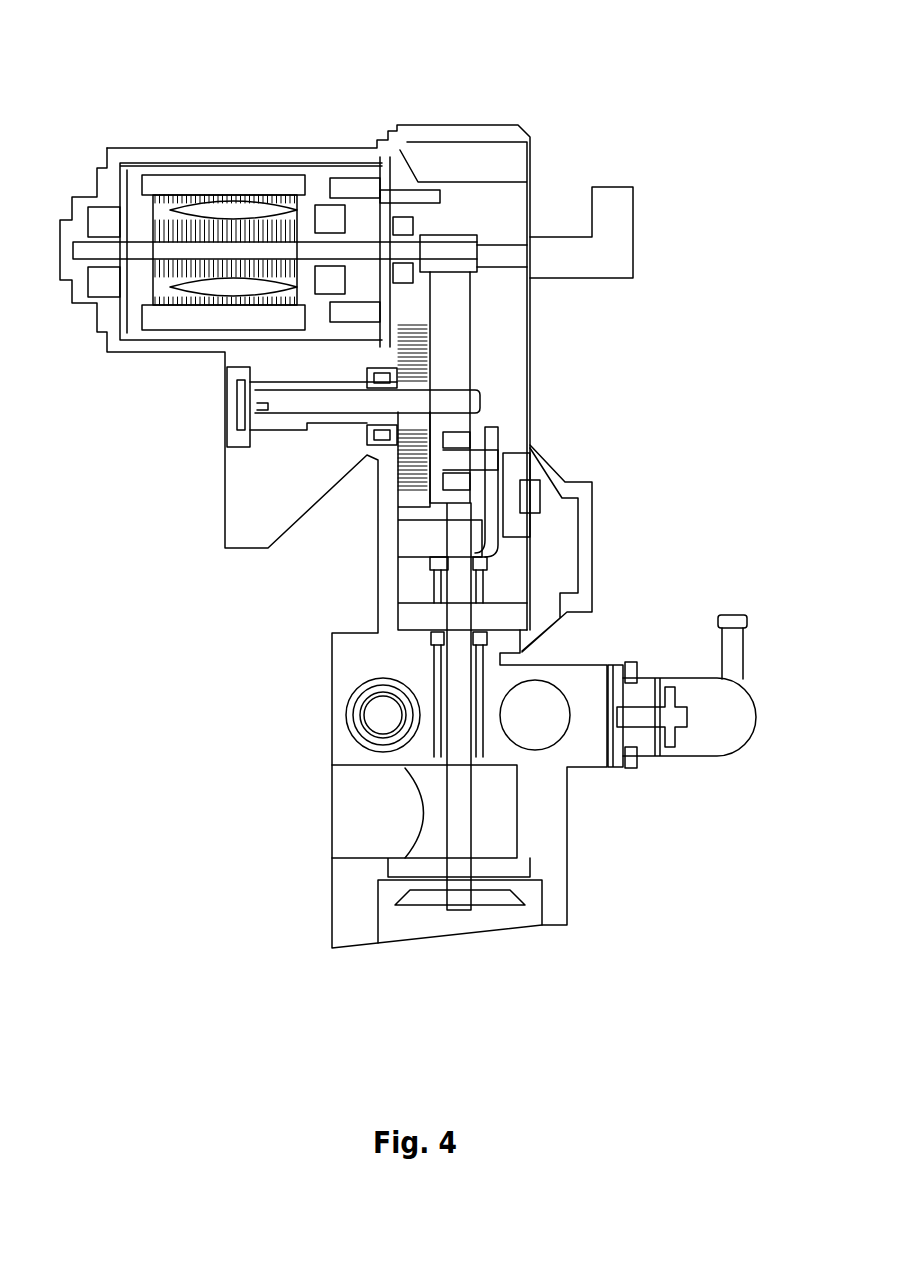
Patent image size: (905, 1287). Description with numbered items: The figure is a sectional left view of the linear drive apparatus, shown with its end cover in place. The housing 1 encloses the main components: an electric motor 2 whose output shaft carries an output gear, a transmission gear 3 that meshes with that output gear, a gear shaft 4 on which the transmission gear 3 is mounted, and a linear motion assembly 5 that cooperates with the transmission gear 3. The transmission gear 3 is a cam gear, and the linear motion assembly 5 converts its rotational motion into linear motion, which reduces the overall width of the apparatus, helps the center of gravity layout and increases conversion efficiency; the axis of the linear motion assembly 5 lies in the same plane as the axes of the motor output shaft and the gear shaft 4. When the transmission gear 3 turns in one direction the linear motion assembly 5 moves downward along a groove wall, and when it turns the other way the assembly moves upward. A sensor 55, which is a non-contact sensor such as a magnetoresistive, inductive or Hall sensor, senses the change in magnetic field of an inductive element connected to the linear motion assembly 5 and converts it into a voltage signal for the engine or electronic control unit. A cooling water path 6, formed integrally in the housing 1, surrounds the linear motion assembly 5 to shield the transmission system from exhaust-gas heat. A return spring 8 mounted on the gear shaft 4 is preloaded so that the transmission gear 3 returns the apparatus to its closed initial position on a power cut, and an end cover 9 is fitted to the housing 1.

The housing 1 is at (317, 155).
The electric motor 2 is at (193, 190).
The transmission gear 3 is at (452, 300).
The gear shaft 4 is at (463, 402).
The linear motion assembly 5 is at (487, 903).
The cooling water path 6 is at (570, 737).
The return spring 8 is at (380, 385).
The end cover 9 is at (592, 260).
The sensor 55 is at (532, 487).